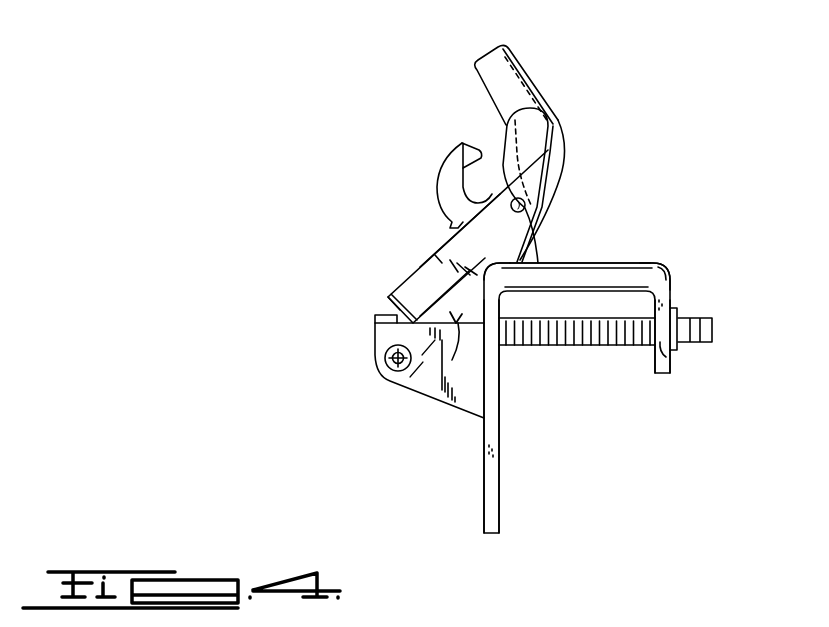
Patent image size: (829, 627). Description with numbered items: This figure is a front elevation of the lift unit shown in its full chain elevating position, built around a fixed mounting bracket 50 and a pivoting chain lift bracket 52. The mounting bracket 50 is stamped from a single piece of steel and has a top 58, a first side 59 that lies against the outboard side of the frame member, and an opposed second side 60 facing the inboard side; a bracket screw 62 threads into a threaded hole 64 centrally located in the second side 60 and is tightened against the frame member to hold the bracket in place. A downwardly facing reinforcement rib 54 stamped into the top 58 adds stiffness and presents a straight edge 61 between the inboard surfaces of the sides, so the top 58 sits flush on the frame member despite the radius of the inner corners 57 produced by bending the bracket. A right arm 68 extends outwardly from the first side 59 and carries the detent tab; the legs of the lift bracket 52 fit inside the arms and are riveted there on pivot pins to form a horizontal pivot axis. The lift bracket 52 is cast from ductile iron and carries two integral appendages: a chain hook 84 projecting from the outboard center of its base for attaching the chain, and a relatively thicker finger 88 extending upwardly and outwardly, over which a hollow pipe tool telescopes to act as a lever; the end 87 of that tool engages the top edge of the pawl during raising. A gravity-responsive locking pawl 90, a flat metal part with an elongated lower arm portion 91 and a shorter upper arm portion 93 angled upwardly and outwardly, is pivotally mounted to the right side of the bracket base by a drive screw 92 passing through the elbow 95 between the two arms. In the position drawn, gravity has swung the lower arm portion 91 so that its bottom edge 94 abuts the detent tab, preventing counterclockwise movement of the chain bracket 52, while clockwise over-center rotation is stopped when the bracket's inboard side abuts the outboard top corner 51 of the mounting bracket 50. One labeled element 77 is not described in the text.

The mounting bracket 50 is at (672, 277).
The outboard top corner 51 is at (420, 267).
The chain lift bracket 52 is at (457, 323).
The reinforcement rib 54 is at (557, 287).
The inner corners 57 is at (508, 276).
The top 58 is at (628, 262).
The first side 59 is at (487, 490).
The second side 60 is at (677, 307).
The straight edge 61 is at (628, 285).
The bracket screw 62 is at (577, 348).
The threaded hole 64 is at (673, 362).
The right arm 68 is at (460, 396).
The stop tab 77 is at (378, 325).
The chain hook 84 is at (457, 165).
The end 87 is at (397, 359).
The finger 88 is at (503, 75).
The locking pawl 90 is at (430, 254).
The lower arm portion 91 is at (420, 292).
The drive screw 92 is at (511, 204).
The upper arm portion 93 is at (551, 128).
The bottom edge 94 is at (383, 302).
The elbow 95 is at (540, 203).